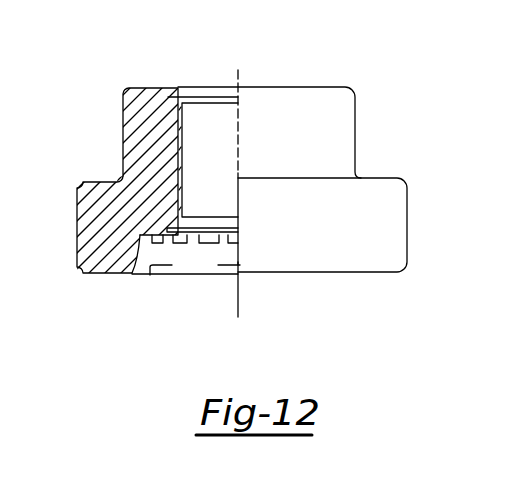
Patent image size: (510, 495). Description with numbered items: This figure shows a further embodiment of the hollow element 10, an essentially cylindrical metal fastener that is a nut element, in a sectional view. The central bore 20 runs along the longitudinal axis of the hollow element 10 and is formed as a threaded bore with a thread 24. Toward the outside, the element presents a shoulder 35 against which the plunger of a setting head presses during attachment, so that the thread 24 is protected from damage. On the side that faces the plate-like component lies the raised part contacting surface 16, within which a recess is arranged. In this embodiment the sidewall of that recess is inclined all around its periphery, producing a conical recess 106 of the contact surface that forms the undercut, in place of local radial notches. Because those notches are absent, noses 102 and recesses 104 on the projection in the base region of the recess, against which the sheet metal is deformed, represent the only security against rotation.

The hollow element 10 is at (358, 107).
The raised part contacting surface 16 is at (103, 275).
The bore 20 is at (234, 130).
The thread 24 is at (182, 124).
The shoulder 35 is at (108, 178).
The noses 102 is at (148, 240).
The recesses 104 is at (192, 243).
The conical recess 106 is at (135, 268).